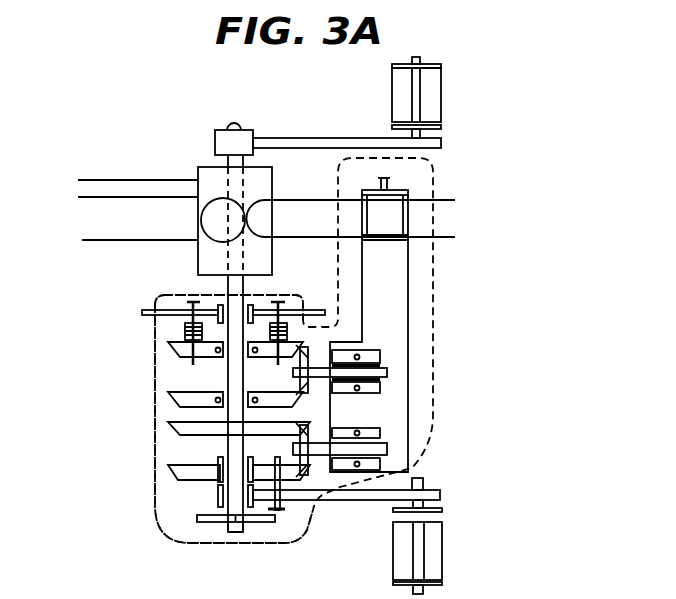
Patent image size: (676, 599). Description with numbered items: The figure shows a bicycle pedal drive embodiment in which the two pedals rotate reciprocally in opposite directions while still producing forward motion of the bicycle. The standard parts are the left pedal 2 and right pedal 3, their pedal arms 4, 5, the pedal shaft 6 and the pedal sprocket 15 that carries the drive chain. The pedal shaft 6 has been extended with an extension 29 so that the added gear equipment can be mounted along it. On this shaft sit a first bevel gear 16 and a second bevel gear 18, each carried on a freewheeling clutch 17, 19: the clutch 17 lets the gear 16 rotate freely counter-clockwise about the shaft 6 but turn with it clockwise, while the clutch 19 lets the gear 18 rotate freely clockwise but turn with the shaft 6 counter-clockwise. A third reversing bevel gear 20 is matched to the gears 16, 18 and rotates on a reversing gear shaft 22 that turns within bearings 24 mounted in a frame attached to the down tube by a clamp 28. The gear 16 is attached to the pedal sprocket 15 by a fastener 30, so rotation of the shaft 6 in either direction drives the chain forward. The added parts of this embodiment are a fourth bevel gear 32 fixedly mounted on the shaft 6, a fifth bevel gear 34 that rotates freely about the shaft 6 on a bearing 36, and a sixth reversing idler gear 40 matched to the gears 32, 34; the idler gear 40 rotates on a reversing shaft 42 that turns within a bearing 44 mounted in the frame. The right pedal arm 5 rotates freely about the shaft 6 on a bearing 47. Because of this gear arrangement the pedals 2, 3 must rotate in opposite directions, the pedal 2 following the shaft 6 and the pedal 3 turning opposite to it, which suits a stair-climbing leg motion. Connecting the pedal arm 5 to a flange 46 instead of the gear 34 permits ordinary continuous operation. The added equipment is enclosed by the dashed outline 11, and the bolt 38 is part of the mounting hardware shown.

The left pedal 2 is at (441, 87).
The right pedal 3 is at (443, 558).
The pedal arm 4 is at (312, 137).
The right pedal arm 5 is at (357, 502).
The pedal shaft 6 is at (226, 160).
The transfer unit 11 is at (196, 295).
The pedal sprocket 15 is at (142, 312).
The first bevel gear 16 is at (185, 340).
The freewheeling clutch 17 is at (190, 363).
The second bevel gear 18 is at (170, 394).
The freewheeling clutch 19 is at (170, 425).
The third reversing bevel gear 20 is at (328, 392).
The reversing gear shaft 22 is at (320, 380).
The bearings 24 is at (378, 350).
The clamp 28 is at (403, 178).
The extension 29 is at (228, 283).
The fastener 30 is at (280, 303).
The fourth bevel gear 32 is at (168, 470).
The fifth bevel gear 34 is at (218, 483).
The bearing 36 is at (218, 500).
The bolt 38 is at (283, 510).
The sixth reversing idler gear 40 is at (313, 470).
The reversing shaft 42 is at (385, 445).
The bearing 44 is at (400, 472).
The flange 46 is at (208, 522).
The bearing 47 is at (228, 527).